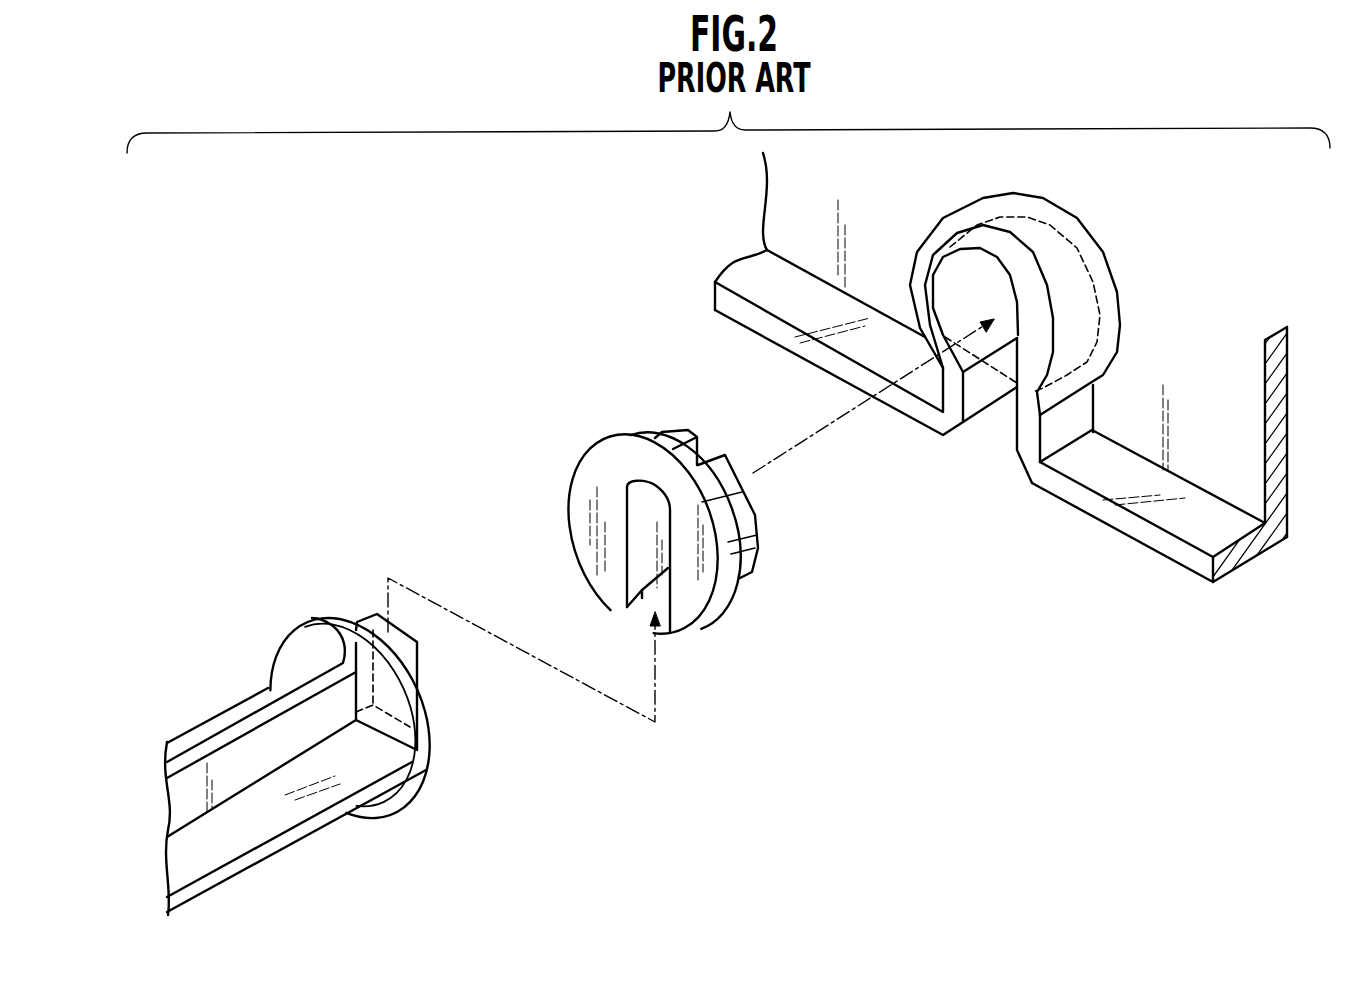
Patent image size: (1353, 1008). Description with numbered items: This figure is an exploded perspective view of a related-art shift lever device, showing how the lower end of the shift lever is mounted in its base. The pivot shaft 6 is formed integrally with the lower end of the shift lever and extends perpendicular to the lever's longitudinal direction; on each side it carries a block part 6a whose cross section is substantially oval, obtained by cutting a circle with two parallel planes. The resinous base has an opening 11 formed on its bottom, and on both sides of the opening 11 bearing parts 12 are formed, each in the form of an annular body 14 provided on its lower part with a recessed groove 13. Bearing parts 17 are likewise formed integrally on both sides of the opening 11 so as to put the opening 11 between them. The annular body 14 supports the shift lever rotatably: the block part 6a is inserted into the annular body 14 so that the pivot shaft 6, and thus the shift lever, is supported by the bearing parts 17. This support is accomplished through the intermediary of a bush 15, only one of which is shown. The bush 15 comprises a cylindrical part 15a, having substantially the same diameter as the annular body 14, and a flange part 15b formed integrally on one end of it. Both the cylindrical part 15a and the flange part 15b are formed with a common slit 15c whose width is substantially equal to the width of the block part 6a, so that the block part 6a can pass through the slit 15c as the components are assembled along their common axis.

The pivot shaft 6 is at (316, 616).
The block part 6a is at (371, 612).
The opening 11 is at (1163, 545).
The bearing part 12 is at (1110, 320).
The recessed groove 13 is at (985, 400).
The annular body 14 is at (1003, 203).
The bush 15 is at (598, 438).
The cylindrical part 15a is at (677, 430).
The flange part 15b is at (587, 503).
The slit 15c is at (648, 565).
The bearing part 17 is at (1230, 437).